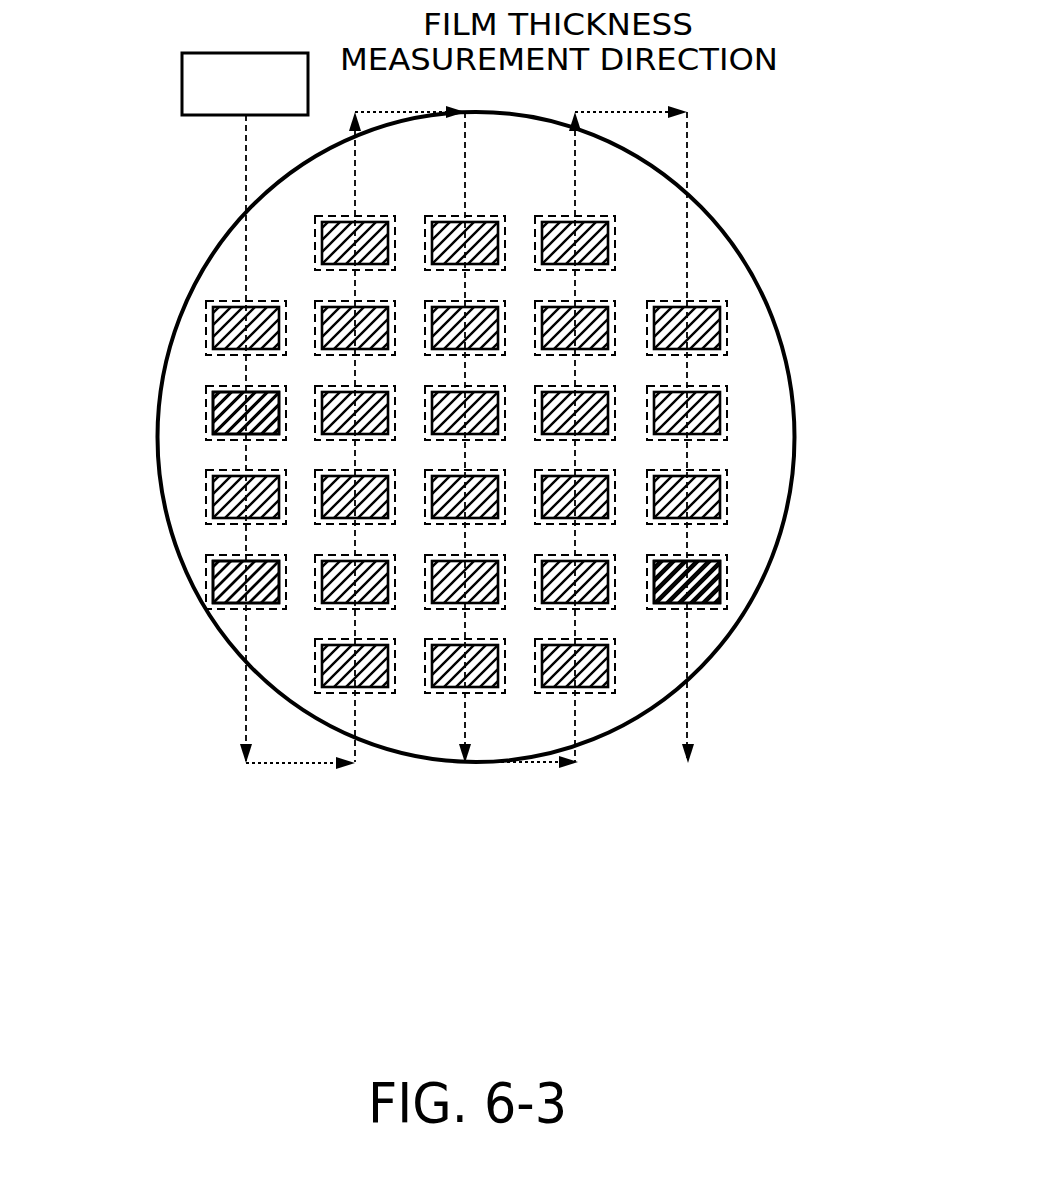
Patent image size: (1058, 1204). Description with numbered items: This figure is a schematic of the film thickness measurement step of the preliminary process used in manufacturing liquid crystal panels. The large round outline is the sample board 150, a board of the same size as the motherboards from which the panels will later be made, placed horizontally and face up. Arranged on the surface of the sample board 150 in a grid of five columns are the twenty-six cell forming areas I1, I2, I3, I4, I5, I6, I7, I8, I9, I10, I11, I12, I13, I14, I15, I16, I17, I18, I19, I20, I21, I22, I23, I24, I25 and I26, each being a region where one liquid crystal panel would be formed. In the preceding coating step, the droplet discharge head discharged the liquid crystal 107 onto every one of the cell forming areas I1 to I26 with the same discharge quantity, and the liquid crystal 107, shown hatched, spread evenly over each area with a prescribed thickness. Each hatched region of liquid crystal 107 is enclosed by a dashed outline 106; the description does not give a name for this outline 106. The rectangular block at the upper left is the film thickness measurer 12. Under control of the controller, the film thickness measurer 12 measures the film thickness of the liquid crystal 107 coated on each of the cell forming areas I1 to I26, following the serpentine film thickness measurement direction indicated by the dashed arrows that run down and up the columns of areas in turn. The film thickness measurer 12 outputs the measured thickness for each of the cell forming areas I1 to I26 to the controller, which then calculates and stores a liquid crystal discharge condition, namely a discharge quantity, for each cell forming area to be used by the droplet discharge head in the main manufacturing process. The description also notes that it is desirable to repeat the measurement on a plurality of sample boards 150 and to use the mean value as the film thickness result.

The film thickness measurer 12 is at (248, 53).
The sample board 150 is at (730, 241).
The chip region 106 is at (212, 323).
The liquid crystal 107 is at (222, 419).
The cell forming area I1 is at (259, 313).
The cell forming area I2 is at (259, 398).
The cell forming area I3 is at (259, 482).
The cell forming area I4 is at (259, 567).
The cell forming area I5 is at (368, 228).
The cell forming area I6 is at (368, 313).
The cell forming area I7 is at (368, 398).
The cell forming area I8 is at (368, 482).
The cell forming area I9 is at (368, 567).
The cell forming area I10 is at (377, 651).
The cell forming area I11 is at (487, 228).
The cell forming area I12 is at (487, 313).
The cell forming area I13 is at (487, 398).
The cell forming area I14 is at (487, 482).
The cell forming area I15 is at (487, 567).
The cell forming area I16 is at (487, 651).
The cell forming area I17 is at (597, 228).
The cell forming area I18 is at (597, 313).
The cell forming area I19 is at (597, 398).
The cell forming area I20 is at (597, 482).
The cell forming area I21 is at (597, 567).
The cell forming area I22 is at (597, 651).
The cell forming area I23 is at (709, 313).
The cell forming area I24 is at (709, 398).
The cell forming area I25 is at (709, 482).
The cell forming area I26 is at (709, 567).